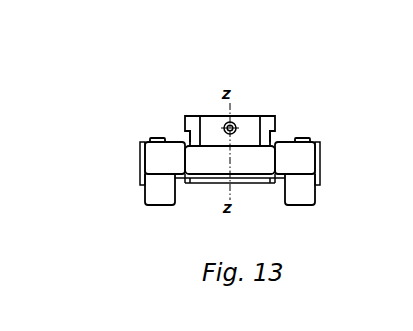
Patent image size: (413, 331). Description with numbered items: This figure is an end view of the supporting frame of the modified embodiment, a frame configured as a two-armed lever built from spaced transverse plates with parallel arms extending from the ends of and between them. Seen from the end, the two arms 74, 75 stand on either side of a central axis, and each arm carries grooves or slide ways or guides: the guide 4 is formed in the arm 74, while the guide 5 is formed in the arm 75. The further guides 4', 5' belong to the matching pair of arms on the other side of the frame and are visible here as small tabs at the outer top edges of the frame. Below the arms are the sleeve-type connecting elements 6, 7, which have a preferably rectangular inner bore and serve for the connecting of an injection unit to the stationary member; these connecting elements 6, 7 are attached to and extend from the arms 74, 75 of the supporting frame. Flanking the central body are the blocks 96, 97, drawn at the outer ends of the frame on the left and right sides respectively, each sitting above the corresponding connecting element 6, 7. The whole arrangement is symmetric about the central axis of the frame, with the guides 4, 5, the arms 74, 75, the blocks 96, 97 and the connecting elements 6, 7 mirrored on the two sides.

The groove or slide way or guide 4 is at (192, 91).
The groove or slide way or guide 4' is at (140, 89).
The arm 74 is at (187, 130).
The groove or slide way or guide 5 is at (267, 91).
The groove or slide way or guide 5' is at (320, 89).
The arm 75 is at (271, 133).
The left bearing block 96 is at (170, 152).
The right bearing block 97 is at (290, 152).
The sleeve-type connecting element 6 is at (153, 193).
The sleeve-type connecting element 7 is at (310, 197).